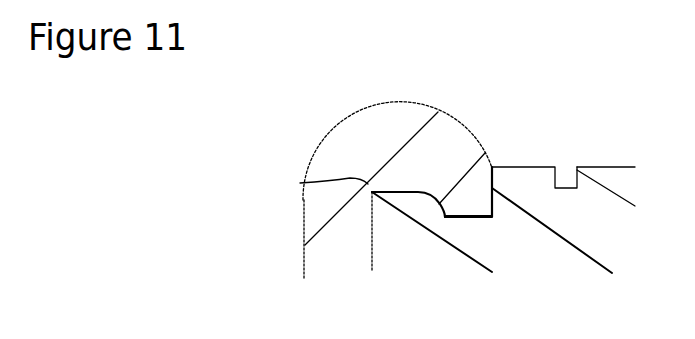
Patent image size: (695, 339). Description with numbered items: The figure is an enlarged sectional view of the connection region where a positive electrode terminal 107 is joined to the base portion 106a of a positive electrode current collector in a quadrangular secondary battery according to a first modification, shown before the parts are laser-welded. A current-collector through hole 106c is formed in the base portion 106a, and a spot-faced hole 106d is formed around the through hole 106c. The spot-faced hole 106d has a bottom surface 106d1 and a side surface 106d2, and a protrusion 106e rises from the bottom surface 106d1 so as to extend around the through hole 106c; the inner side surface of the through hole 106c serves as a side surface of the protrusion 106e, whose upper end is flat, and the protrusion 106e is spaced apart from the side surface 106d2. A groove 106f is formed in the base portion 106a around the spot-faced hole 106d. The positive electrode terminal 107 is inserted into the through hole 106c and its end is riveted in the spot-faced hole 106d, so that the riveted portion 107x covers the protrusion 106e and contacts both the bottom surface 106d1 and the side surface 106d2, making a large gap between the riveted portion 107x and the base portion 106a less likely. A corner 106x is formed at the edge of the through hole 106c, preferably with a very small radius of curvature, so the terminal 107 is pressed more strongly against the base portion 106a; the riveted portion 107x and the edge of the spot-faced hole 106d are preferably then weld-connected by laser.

The positive electrode terminal 107 is at (318, 144).
The riveted portion 107x is at (397, 138).
The corner 106x is at (300, 183).
The protrusion 106e is at (412, 202).
The current-collector through hole 106c is at (372, 254).
The spot-faced hole 106d is at (471, 203).
The bottom surface 106d1 is at (467, 218).
The side surface 106d2 is at (493, 190).
The groove 106f is at (567, 186).
The base portion 106a is at (613, 154).